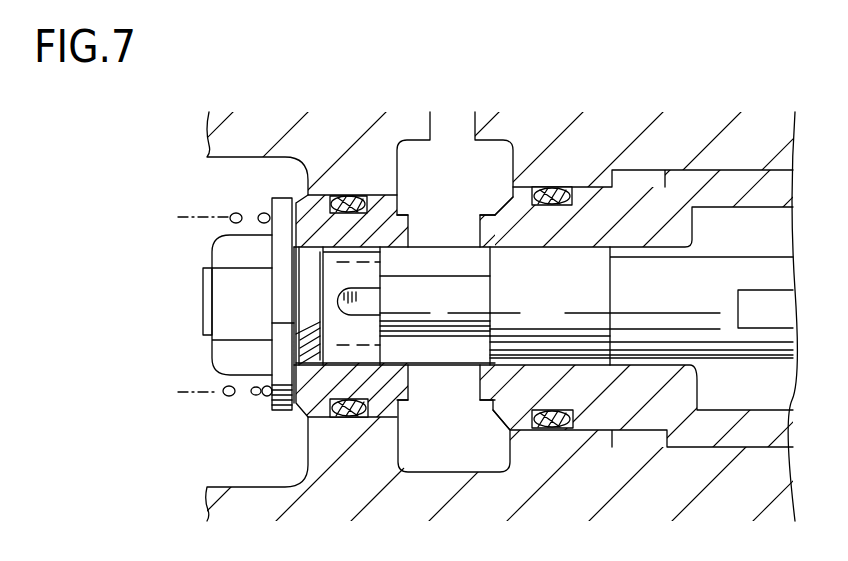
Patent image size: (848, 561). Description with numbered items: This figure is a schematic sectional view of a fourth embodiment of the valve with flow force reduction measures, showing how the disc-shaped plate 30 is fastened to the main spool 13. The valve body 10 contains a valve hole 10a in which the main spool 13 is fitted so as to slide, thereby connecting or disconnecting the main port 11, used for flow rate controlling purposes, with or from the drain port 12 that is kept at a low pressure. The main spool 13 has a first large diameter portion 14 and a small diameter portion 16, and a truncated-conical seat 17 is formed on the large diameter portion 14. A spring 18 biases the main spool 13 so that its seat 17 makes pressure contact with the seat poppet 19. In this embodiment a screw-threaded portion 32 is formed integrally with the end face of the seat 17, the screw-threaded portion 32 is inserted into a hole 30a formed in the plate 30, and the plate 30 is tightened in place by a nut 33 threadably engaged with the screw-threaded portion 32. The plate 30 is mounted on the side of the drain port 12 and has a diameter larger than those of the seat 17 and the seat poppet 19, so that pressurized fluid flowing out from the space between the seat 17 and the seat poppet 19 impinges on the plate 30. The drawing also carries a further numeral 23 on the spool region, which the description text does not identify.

The valve body 10 is at (583, 200).
The valve hole 10a is at (536, 252).
The main port 11 is at (480, 223).
The drain port 12 is at (306, 466).
The main spool 13 is at (434, 241).
The first large diameter portion 14 is at (346, 403).
The small diameter portion 16 is at (451, 320).
The seat 17 is at (295, 274).
The spring 18 is at (223, 398).
The seat poppet 19 is at (311, 250).
The slot 23 is at (380, 300).
The disc-shaped plate 30 is at (279, 411).
The hole 30a is at (293, 352).
The screw-threaded portion 32 is at (203, 298).
The nut 33 is at (222, 363).